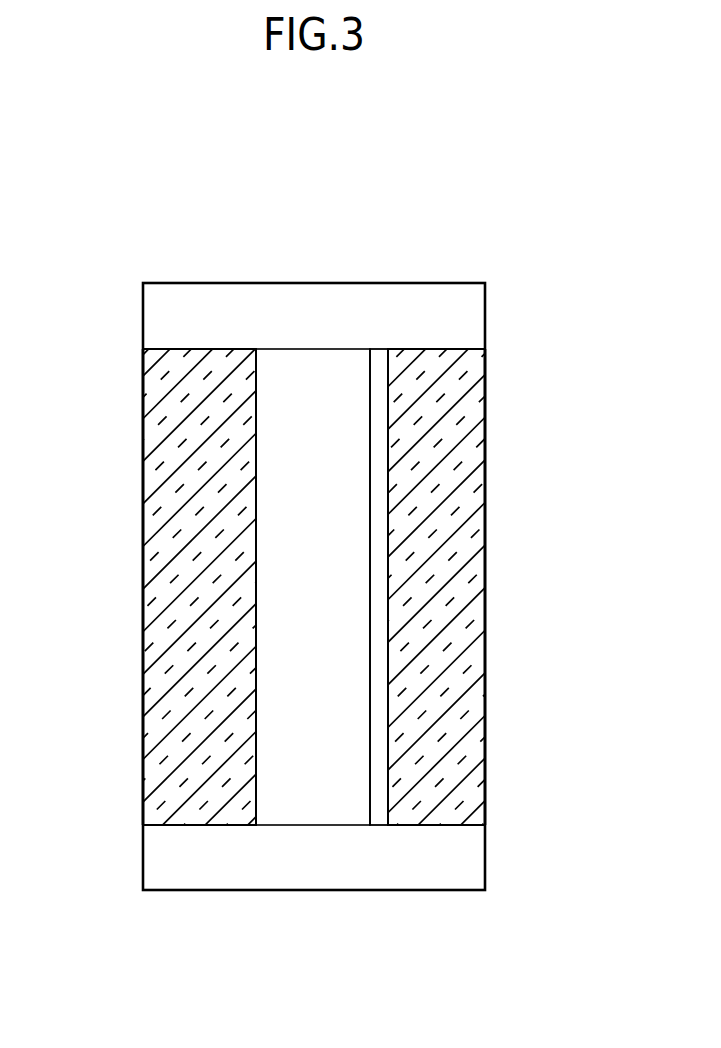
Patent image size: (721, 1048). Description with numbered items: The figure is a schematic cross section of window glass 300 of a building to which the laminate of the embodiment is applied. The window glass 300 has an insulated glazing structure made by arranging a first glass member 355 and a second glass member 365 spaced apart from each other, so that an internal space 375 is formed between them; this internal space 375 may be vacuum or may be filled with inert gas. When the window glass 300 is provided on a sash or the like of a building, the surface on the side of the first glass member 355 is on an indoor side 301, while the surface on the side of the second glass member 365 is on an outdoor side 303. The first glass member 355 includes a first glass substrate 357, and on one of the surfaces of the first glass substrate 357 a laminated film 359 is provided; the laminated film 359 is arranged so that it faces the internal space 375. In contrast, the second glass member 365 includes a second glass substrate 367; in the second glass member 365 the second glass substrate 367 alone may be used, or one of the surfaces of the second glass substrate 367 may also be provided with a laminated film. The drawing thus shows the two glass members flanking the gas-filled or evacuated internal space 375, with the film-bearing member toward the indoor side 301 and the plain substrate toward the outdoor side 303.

The window glass 300 is at (545, 207).
The indoor side 301 is at (574, 577).
The outdoor side 303 is at (53, 577).
The first glass member 355 is at (500, 678).
The first glass substrate 357 is at (453, 385).
The laminated film 359 is at (380, 375).
The second glass member 365 is at (128, 678).
The second glass substrate 367 is at (203, 380).
The internal space 375 is at (320, 378).